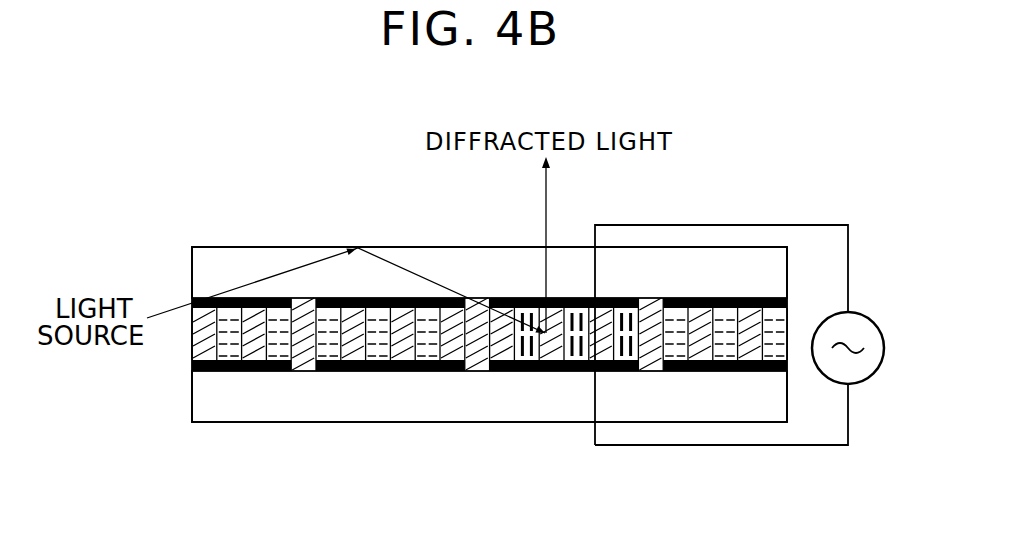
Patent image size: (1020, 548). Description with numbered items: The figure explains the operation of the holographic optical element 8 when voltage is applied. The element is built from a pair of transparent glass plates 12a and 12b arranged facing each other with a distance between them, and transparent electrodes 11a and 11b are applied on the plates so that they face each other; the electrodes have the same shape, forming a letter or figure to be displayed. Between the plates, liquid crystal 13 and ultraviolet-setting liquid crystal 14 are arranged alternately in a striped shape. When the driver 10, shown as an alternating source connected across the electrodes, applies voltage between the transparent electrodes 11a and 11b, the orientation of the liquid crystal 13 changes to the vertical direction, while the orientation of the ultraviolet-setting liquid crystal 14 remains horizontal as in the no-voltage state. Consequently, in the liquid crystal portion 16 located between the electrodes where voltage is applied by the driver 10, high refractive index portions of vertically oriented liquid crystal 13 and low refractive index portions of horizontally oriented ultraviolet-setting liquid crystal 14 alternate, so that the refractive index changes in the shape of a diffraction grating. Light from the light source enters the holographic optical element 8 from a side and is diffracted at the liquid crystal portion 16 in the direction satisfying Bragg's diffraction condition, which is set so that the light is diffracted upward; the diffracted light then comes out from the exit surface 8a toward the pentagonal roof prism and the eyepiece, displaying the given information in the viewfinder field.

The holographic optical element 8 is at (215, 230).
The exit surface 8a is at (513, 247).
The driver 10 is at (867, 383).
The transparent electrode 11a is at (265, 300).
The transparent electrode 11b is at (275, 367).
The transparent glass plate 12a is at (430, 262).
The transparent glass plate 12b is at (412, 407).
The liquid crystal 13 is at (225, 352).
The ultraviolet-setting liquid crystal 14 is at (252, 352).
The liquid crystal portion 16 is at (632, 454).